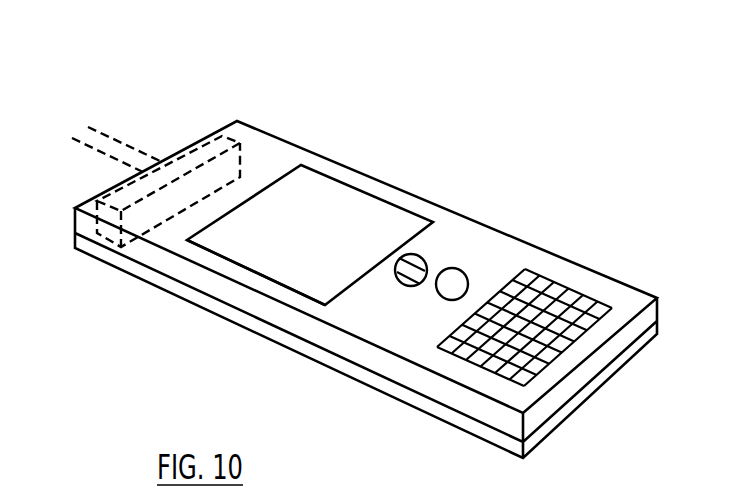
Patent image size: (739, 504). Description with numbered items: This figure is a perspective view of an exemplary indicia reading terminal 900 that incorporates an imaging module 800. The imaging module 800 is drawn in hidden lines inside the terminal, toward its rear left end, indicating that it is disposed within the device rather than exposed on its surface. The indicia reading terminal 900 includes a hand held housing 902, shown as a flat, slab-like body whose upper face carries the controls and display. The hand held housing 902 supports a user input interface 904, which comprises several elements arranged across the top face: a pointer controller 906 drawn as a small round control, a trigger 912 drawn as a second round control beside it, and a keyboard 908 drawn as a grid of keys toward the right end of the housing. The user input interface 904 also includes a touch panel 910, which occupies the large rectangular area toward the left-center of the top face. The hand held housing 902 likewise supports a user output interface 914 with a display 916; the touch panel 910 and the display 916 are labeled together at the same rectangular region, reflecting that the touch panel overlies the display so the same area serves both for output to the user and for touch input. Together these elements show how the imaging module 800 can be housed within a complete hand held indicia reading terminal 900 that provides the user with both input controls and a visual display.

The indicia reading terminal 900 is at (264, 78).
The hand held housing 902 is at (612, 290).
The imaging module 800 is at (183, 158).
The user input interface 904 is at (357, 313).
The touch panel 910 is at (310, 235).
The display 916 is at (343, 182).
The user output interface 914 is at (202, 255).
The pointer controller 906 is at (423, 257).
The trigger 912 is at (462, 270).
The keyboard 908 is at (543, 275).